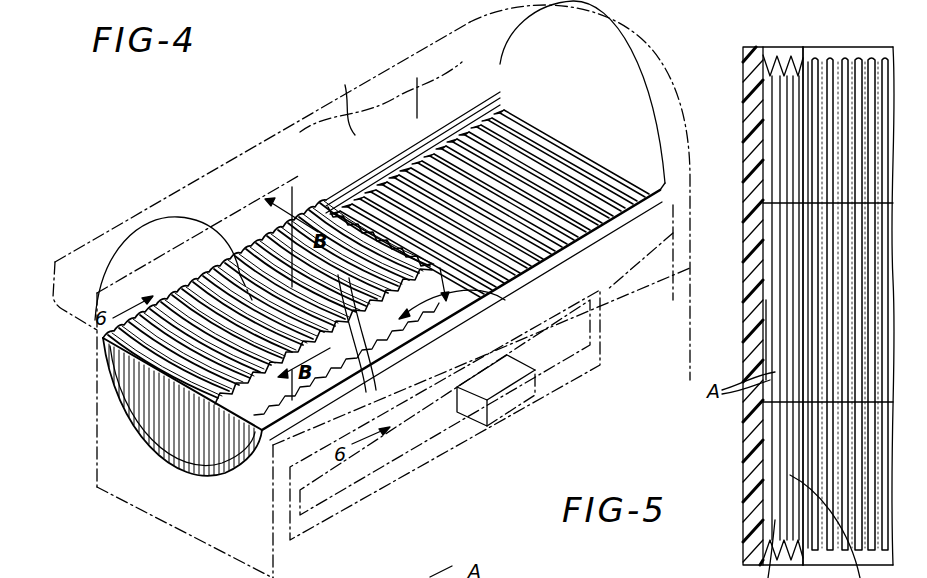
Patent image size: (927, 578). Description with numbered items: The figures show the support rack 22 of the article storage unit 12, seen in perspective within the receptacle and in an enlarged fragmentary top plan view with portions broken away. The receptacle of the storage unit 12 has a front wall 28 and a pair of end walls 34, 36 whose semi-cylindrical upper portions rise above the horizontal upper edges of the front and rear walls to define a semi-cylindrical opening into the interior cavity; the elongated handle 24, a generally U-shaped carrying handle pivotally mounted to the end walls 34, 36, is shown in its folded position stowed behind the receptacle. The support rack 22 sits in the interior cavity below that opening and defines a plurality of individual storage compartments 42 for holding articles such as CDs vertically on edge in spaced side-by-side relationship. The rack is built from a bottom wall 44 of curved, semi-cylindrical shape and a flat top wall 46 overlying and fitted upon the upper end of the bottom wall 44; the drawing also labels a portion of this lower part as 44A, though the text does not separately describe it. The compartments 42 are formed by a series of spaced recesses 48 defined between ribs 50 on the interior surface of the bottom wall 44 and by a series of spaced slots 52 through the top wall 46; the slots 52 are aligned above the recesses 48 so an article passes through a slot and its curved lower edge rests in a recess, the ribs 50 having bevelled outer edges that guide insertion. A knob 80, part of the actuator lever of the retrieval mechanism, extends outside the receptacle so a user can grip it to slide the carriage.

In FIG. 4, the article storage unit 12 is at (673, 98).
In FIG. 4, the support rack 22 is at (168, 449).
In FIG. 5, the support rack 22 is at (777, 48).
In FIG. 4, the elongated handle 24 is at (196, 204).
In FIG. 4, the front wall 28 is at (676, 230).
In FIG. 4, the end wall 34 is at (612, 115).
In FIG. 4, the end wall 36 is at (154, 270).
In FIG. 4, the storage compartments 42 is at (410, 183).
In FIG. 5, the storage compartments 42 is at (832, 130).
In FIG. 4, the bottom wall 44 is at (262, 452).
In FIG. 4, the lip inner edge 44A is at (505, 300).
In FIG. 5, the lip inner edge 44A is at (790, 290).
In FIG. 4, the top wall 46 is at (656, 186).
In FIG. 5, the top wall 46 is at (805, 58).
In FIG. 4, the recesses 48 is at (182, 340).
In FIG. 4, the ribs 50 is at (355, 370).
In FIG. 4, the slots 52 is at (530, 158).
In FIG. 5, the slots 52 is at (870, 58).
In FIG. 4, the knob 80 is at (517, 393).